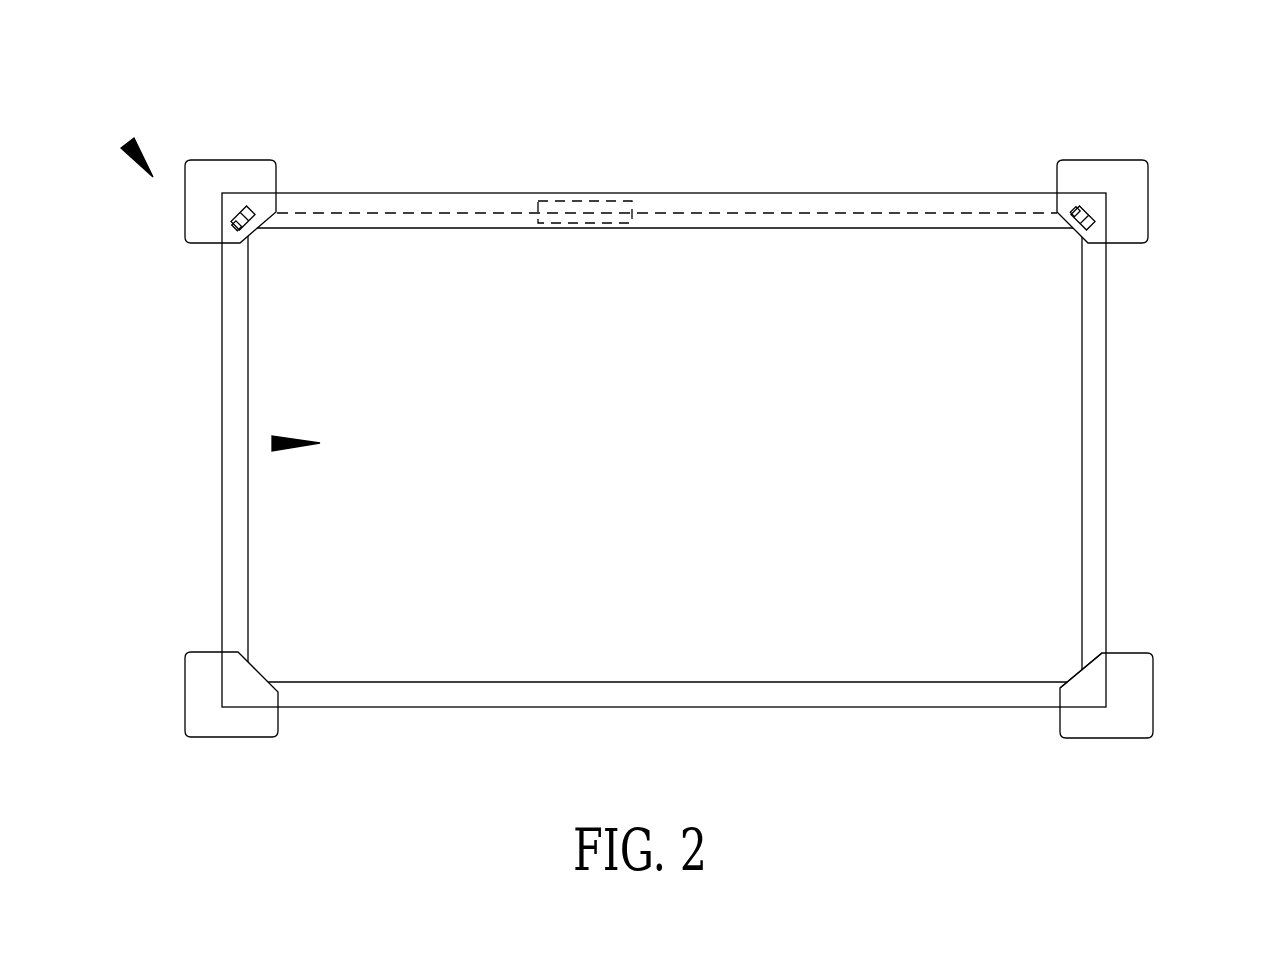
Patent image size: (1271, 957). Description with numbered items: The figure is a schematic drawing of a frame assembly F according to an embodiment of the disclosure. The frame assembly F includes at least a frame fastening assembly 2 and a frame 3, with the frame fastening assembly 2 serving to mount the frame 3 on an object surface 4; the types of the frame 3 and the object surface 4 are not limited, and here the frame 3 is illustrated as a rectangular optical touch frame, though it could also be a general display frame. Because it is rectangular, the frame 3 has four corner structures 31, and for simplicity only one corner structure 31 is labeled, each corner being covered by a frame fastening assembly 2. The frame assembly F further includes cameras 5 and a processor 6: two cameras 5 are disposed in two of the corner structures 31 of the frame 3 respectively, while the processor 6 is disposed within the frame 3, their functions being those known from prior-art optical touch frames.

The frame fastening assembly 2 is at (197, 231).
The frame 3 is at (237, 528).
The corner structure 31 is at (1090, 690).
The object surface 4 is at (272, 443).
The camera 5 is at (242, 207).
The processor 6 is at (583, 213).
The frame assembly F is at (128, 141).